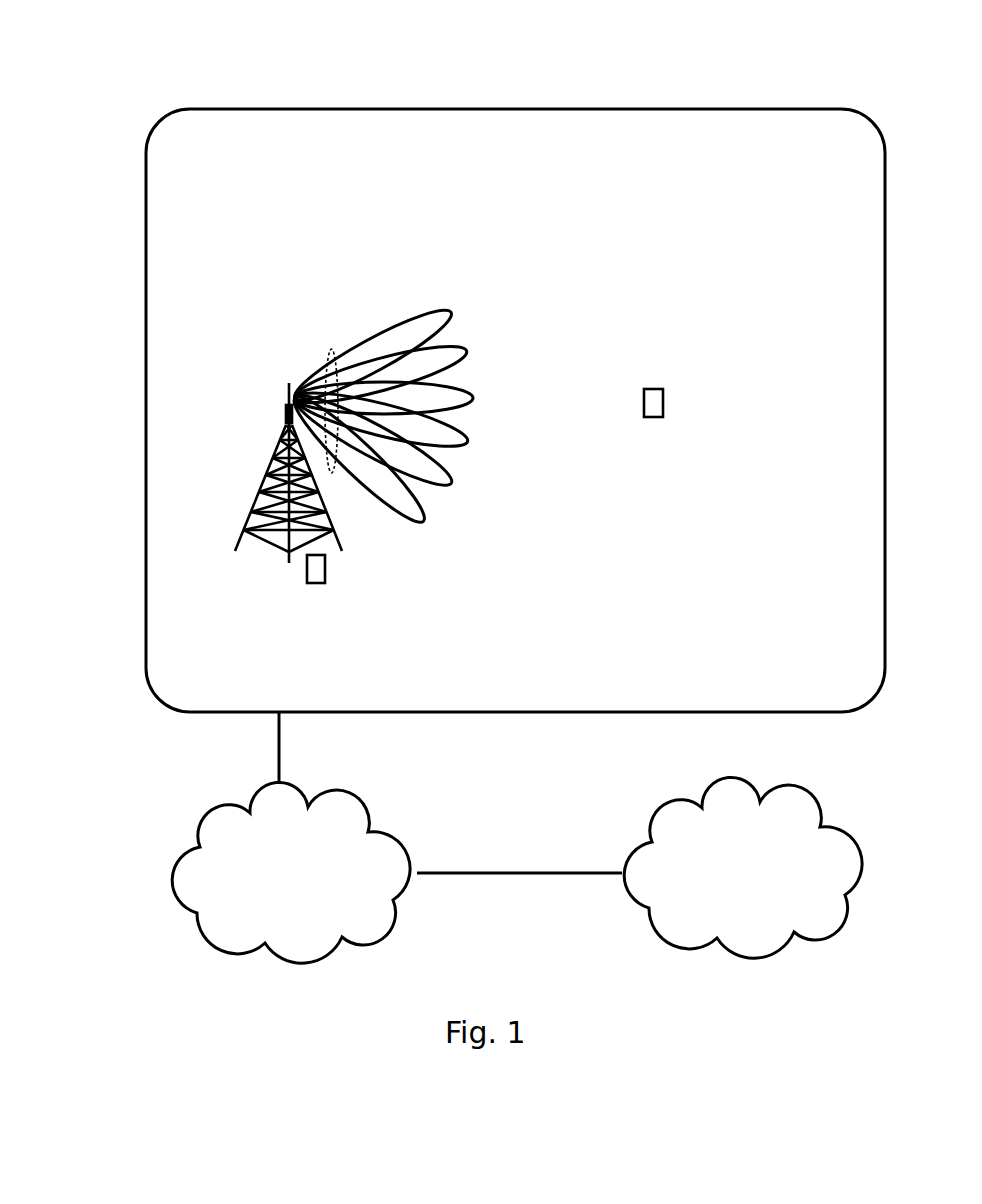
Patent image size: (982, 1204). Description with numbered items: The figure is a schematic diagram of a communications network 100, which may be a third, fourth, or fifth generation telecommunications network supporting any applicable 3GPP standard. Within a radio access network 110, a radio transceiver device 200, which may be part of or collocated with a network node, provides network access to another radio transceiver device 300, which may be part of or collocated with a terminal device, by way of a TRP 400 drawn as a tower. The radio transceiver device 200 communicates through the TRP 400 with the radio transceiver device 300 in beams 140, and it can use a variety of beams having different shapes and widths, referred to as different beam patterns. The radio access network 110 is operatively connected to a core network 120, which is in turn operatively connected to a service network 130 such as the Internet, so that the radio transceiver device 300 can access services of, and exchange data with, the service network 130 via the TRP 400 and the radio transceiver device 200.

The communications network 100 is at (236, 76).
The radio access network 110 is at (145, 603).
The core network 120 is at (291, 837).
The service network 130 is at (639, 867).
The beams 140 is at (332, 348).
The radio transceiver device 200 is at (307, 570).
The radio transceiver device 300 is at (653, 417).
The TRP 400 is at (287, 404).